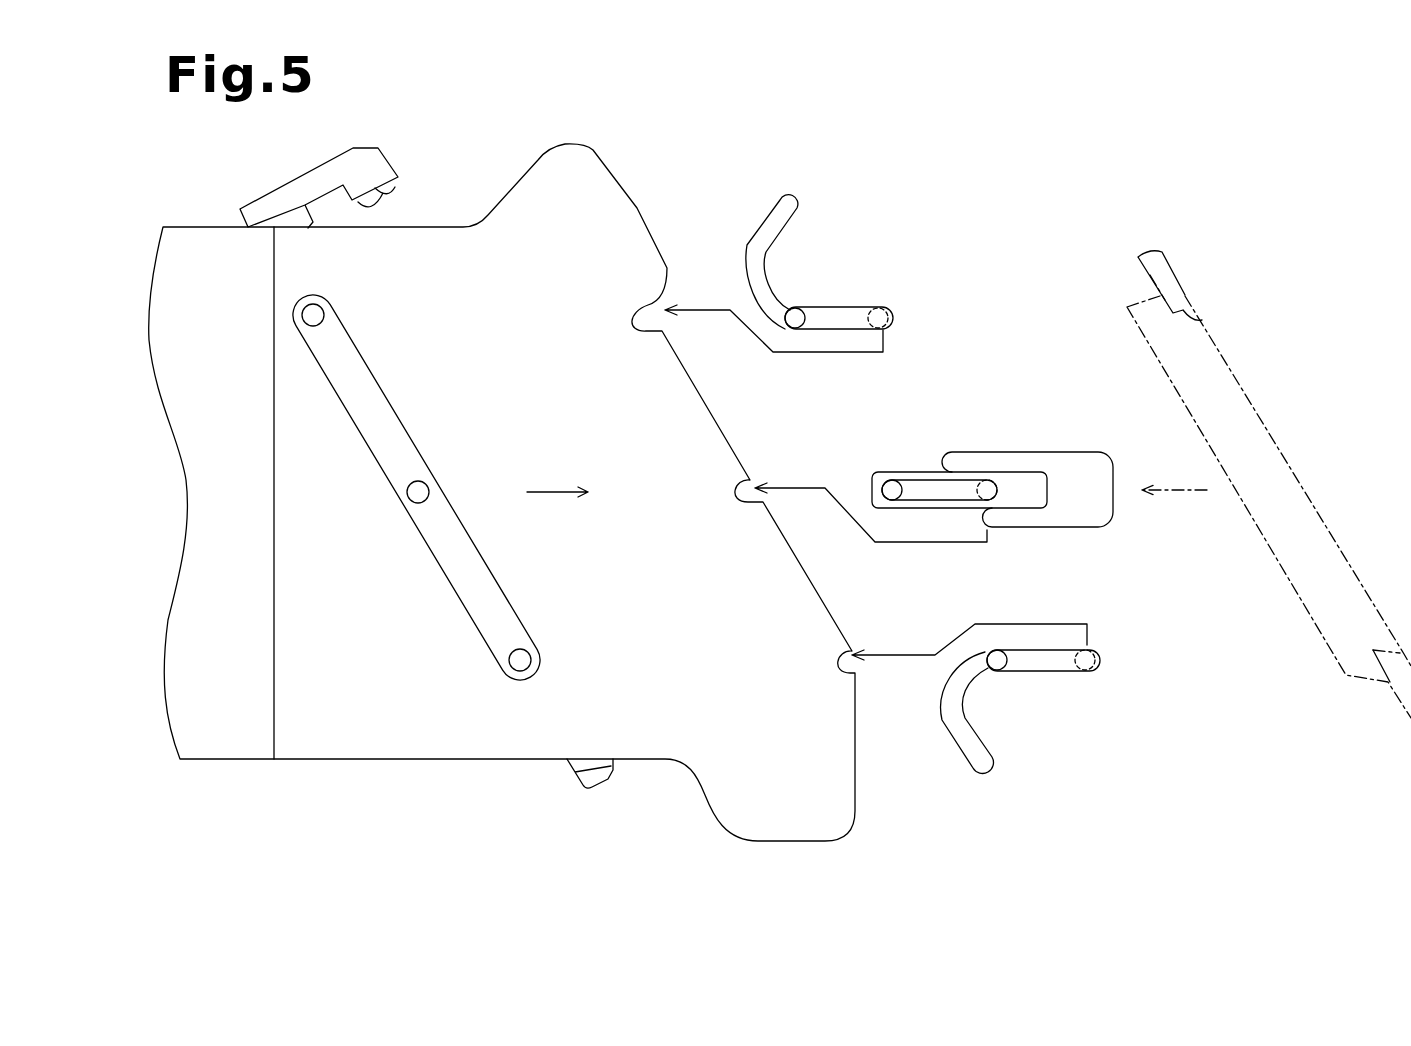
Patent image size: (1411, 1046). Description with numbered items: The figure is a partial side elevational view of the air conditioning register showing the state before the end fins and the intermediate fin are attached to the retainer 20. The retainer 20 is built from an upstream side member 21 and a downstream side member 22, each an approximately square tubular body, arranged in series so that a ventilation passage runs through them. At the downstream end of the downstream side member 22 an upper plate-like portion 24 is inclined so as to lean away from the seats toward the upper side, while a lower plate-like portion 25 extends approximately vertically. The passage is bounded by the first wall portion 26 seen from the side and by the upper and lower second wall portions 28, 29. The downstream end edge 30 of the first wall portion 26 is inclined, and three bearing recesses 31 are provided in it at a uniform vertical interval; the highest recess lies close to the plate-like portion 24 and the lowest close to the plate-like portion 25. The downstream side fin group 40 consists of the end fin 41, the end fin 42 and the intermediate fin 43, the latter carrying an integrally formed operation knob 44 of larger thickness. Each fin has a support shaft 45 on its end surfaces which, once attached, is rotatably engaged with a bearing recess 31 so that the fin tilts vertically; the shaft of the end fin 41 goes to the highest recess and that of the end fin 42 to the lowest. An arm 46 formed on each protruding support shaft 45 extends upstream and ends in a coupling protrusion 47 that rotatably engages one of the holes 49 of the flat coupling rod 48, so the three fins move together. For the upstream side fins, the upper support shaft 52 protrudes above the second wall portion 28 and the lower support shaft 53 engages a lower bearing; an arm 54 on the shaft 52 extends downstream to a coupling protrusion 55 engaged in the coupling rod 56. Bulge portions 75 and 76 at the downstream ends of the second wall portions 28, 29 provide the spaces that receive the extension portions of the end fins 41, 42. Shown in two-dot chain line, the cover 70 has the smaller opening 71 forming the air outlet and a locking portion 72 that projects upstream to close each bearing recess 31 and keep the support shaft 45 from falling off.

The retainer 20 is at (355, 825).
The upstream side member 21 is at (222, 757).
The downstream side member 22 is at (345, 754).
The plate-like portion 24 is at (640, 207).
The plate-like portion 25 is at (857, 810).
The first wall portion 26 is at (210, 502).
The second wall portion 28 is at (183, 225).
The second wall portion 29 is at (190, 766).
The downstream end edge 30 is at (727, 437).
The bearing recess 31 is at (657, 320).
The downstream side fin group 40 is at (936, 192).
The end fin 41 is at (780, 230).
The end fin 42 is at (972, 737).
The intermediate fin 43 is at (895, 476).
The operation knob 44 is at (1103, 508).
The support shaft 45 is at (893, 318).
The arm 46 is at (857, 312).
The coupling protrusion 47 is at (797, 310).
The coupling rod 48 is at (470, 600).
The hole 49 is at (320, 312).
The support shaft 52 is at (248, 227).
The support shaft 53 is at (577, 768).
The arm 54 is at (312, 178).
The coupling protrusion 55 is at (398, 190).
The coupling rod 56 is at (395, 170).
The cover 70 is at (1230, 358).
The opening 71 is at (1207, 315).
The locking portion 72 is at (1330, 648).
The bulge portion 75 is at (541, 163).
The bulge portion 76 is at (722, 808).